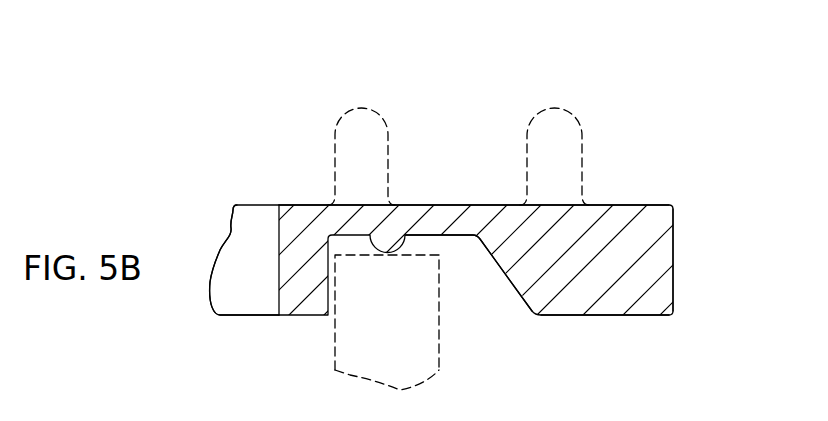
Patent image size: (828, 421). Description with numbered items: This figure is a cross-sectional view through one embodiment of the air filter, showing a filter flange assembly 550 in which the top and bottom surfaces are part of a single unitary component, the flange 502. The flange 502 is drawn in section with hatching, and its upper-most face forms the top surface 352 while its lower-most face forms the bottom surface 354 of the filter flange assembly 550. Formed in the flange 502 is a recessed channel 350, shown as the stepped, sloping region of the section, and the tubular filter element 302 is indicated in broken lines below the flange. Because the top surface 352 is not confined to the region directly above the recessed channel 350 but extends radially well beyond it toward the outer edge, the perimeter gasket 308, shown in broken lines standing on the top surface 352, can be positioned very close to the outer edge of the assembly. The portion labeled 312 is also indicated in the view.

The tubular filter element 302 is at (353, 377).
The perimeter gasket 308 is at (527, 165).
The substrate 312 is at (254, 200).
The recessed channel 350 is at (472, 285).
The top surface 352 is at (605, 205).
The bottom surface 354 is at (638, 315).
The flange 502 is at (643, 235).
The filter flange assembly 550 is at (690, 250).